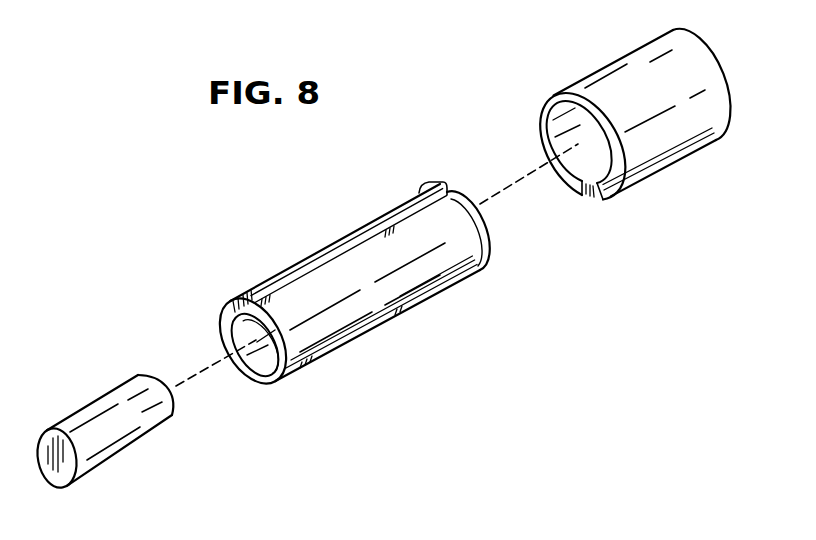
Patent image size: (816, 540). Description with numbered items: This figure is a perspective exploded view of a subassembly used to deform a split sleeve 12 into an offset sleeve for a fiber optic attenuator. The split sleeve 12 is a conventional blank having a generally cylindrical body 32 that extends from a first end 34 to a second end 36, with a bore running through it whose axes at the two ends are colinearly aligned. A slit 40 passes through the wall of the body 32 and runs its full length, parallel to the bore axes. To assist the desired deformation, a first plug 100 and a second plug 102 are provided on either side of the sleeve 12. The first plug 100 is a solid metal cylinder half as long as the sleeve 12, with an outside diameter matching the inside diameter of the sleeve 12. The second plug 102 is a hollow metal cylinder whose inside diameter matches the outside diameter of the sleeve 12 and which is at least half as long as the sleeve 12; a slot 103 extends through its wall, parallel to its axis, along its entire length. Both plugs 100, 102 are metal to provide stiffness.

The split sleeve 12 is at (320, 243).
The cylindrical body 32 is at (391, 300).
The first end 34 is at (266, 386).
The second end 36 is at (488, 242).
The slit 40 is at (411, 201).
The first plug 100 is at (86, 406).
The second plug 102 is at (592, 68).
The slot 103 is at (586, 198).